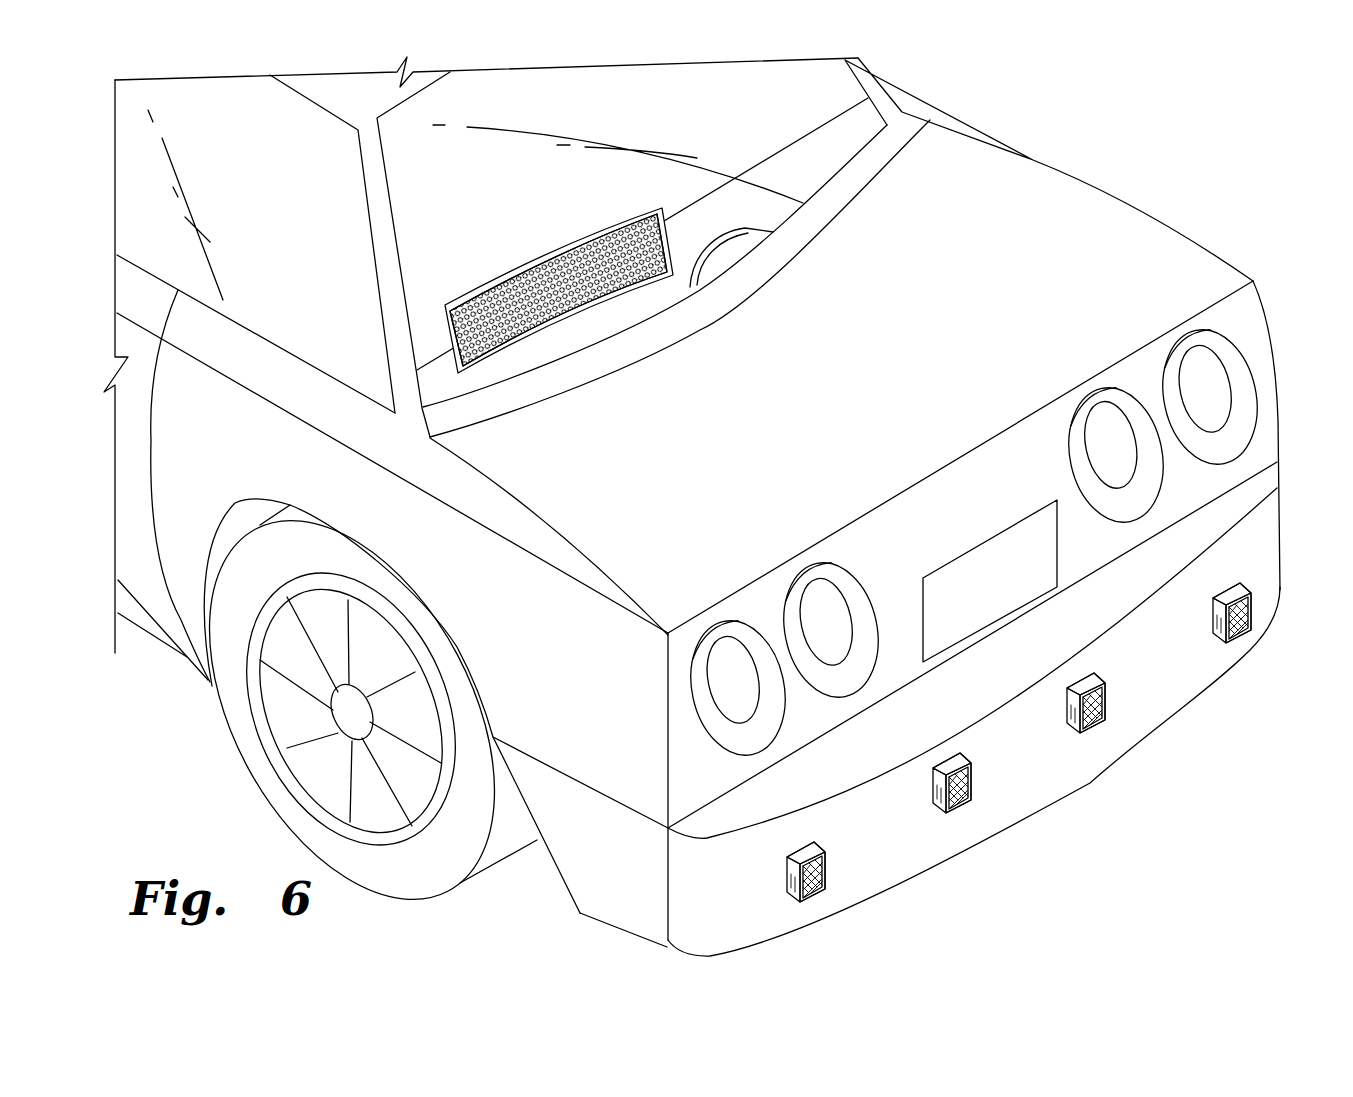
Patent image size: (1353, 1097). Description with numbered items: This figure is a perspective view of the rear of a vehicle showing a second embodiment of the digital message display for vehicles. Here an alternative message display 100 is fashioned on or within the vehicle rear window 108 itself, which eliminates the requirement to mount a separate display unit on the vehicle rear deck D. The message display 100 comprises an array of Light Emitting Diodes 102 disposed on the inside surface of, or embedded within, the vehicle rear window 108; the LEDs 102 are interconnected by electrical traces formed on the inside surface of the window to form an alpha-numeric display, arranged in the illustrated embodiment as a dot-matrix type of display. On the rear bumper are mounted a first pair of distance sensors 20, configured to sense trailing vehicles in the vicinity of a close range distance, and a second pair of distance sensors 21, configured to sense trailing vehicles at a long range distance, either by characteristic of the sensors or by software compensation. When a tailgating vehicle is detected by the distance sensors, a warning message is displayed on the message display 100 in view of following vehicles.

The first pair of distance sensors 20 is at (1252, 613).
The second pair of distance sensors 21 is at (1107, 690).
The message display 100 is at (537, 272).
The Light Emitting Diodes 102 is at (607, 300).
The vehicle rear window 108 is at (714, 117).
The vehicle rear deck D is at (827, 165).